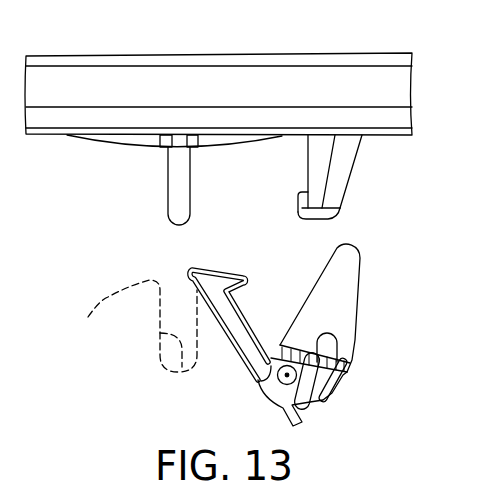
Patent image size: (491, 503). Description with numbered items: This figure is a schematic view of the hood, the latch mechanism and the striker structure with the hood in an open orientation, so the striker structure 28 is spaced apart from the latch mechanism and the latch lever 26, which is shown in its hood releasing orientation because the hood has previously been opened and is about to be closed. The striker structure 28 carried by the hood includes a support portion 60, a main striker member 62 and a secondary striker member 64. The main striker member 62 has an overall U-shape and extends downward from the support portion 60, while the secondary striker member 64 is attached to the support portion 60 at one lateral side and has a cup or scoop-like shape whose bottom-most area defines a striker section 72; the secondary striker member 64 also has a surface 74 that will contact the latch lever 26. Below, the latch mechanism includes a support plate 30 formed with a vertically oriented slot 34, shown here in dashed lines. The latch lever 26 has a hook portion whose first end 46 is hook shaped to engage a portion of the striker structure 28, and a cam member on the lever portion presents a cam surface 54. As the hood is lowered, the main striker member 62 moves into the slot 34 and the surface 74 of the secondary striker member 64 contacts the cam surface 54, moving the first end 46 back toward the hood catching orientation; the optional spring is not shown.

The striker structure 28 is at (130, 58).
The support portion 60 is at (338, 92).
The main striker member 62 is at (178, 188).
The secondary striker member 64 is at (340, 167).
The striker section 72 is at (298, 198).
The surface 74 is at (330, 218).
The first end 46 is at (237, 273).
The cam surface 54 is at (313, 293).
The latch lever 26 is at (236, 374).
The support plate 30 is at (108, 297).
The slot 34 is at (180, 370).